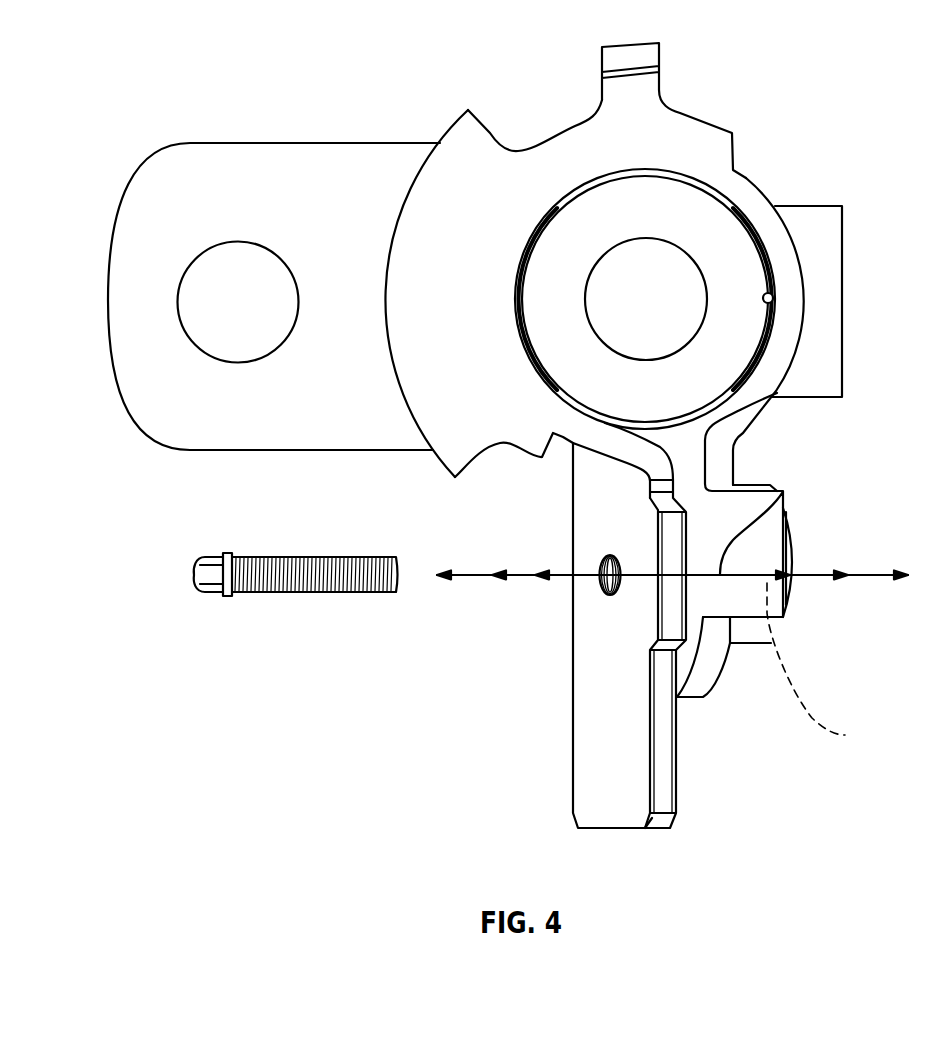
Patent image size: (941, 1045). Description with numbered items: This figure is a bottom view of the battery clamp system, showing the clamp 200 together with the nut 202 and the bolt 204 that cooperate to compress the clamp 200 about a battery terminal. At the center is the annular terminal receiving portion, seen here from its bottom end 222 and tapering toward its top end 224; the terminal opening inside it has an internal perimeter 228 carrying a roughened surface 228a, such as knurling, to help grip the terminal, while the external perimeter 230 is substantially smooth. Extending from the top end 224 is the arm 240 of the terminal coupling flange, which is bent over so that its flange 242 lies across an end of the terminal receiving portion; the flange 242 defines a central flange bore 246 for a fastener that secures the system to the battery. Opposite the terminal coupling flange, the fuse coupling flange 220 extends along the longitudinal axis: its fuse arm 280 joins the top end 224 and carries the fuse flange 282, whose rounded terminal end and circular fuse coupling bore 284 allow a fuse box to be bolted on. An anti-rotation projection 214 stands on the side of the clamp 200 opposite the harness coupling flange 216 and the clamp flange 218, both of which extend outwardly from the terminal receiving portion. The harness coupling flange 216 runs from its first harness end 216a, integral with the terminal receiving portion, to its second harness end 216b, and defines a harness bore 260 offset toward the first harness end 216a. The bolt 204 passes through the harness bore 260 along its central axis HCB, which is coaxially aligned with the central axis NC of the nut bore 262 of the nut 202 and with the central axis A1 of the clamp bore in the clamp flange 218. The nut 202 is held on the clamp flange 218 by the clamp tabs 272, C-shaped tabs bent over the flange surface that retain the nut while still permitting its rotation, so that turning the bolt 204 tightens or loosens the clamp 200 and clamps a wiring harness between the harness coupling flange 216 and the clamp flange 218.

The clamp 200 is at (190, 55).
The fuse flange 282 is at (274, 287).
The fuse coupling bore 284 is at (200, 336).
The fuse coupling flange 220 is at (268, 466).
The fuse arm 280 is at (488, 130).
The anti-rotation projection 214 is at (676, 48).
The bottom end 222 is at (753, 196).
The flange 242 is at (679, 174).
The internal perimeter 228 is at (770, 246).
The roughened surface 228a is at (773, 303).
The central flange bore 246 is at (686, 254).
The arm 240 is at (846, 336).
The external perimeter 230 is at (767, 407).
The top end 224 is at (603, 425).
The harness coupling flange 216 is at (573, 672).
The first harness end 216a is at (620, 470).
The second harness end 216b is at (657, 830).
The clamp tabs 272 is at (780, 621).
The clamp flange 218 is at (744, 653).
The nut 202 is at (797, 590).
The nut bore 262 is at (831, 666).
The harness bore 260 is at (600, 590).
The central axis A1 is at (780, 486).
The central axis of the harness bore HCB is at (548, 582).
The central axis of the nut bore NC is at (810, 573).
The bolt 204 is at (226, 597).